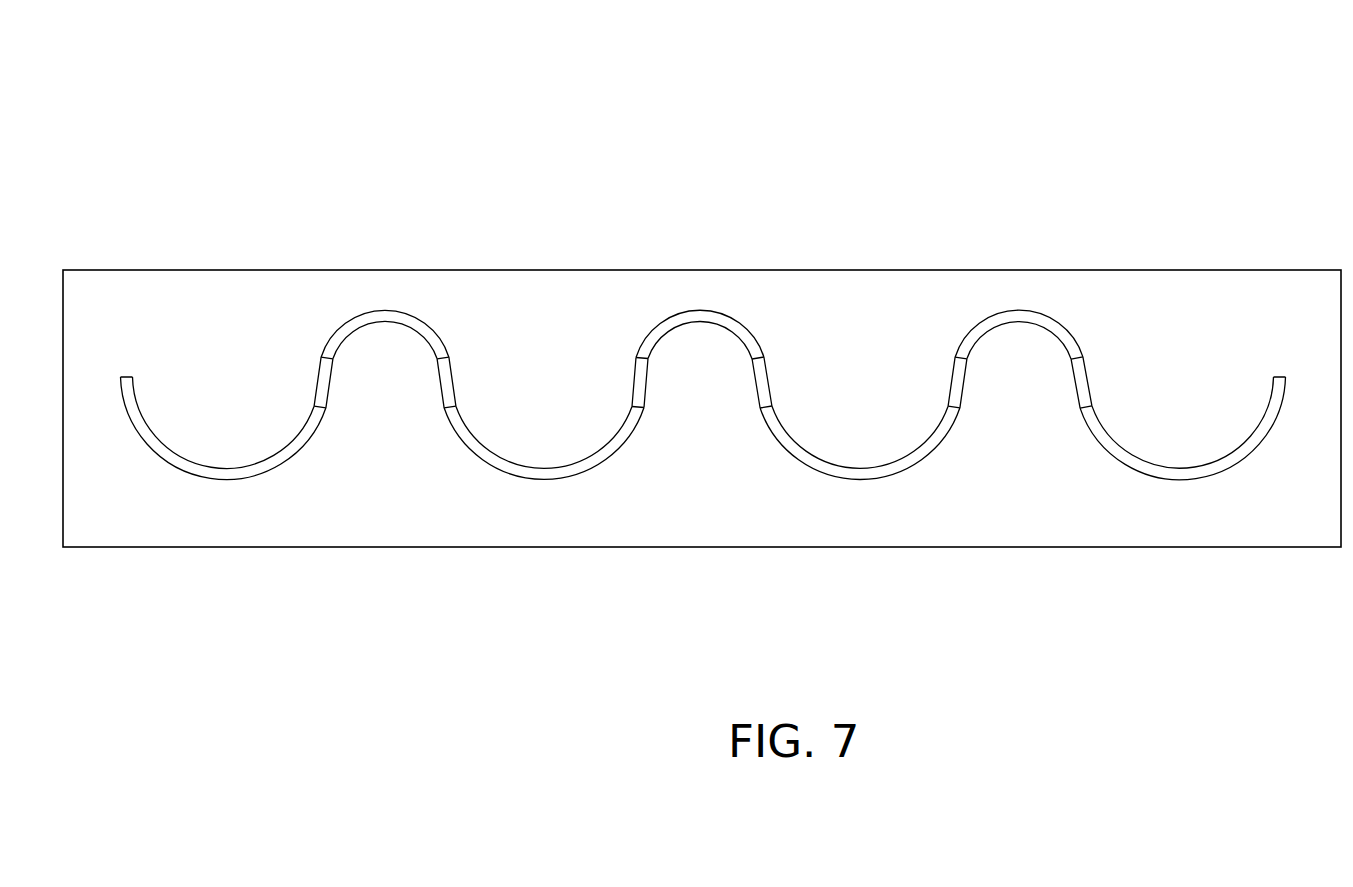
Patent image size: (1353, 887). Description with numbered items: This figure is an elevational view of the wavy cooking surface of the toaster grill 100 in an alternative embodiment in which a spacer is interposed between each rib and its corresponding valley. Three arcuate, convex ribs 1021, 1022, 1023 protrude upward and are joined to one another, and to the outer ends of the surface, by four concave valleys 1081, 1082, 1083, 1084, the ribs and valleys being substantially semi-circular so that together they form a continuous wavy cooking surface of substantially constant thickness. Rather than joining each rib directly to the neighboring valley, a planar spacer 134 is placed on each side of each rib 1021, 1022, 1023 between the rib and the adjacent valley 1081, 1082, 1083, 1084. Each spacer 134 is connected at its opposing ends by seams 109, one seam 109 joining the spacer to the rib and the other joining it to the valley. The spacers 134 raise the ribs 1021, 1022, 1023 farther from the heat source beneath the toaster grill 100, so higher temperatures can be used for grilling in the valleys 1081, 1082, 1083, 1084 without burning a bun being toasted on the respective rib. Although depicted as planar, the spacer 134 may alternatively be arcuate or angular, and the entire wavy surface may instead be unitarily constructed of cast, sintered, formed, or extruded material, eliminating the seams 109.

The toaster grill 100 is at (421, 97).
The first rib 1021 is at (385, 311).
The second rib 1022 is at (700, 311).
The third rib 1023 is at (1019, 311).
The first valley 1081 is at (226, 481).
The second valley 1082 is at (546, 481).
The third valley 1083 is at (873, 480).
The fourth valley 1084 is at (1180, 481).
The seam 109 is at (322, 357).
The spacer 134 is at (315, 406).